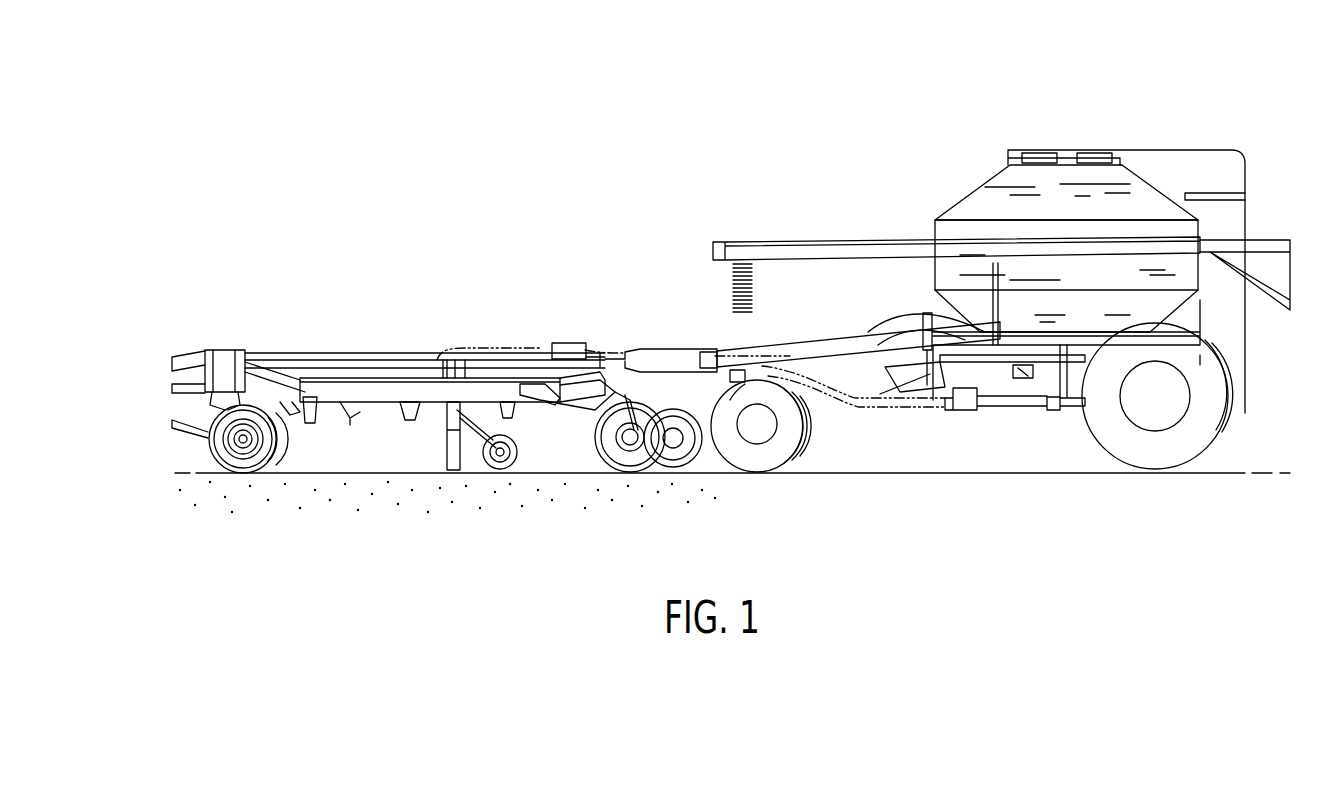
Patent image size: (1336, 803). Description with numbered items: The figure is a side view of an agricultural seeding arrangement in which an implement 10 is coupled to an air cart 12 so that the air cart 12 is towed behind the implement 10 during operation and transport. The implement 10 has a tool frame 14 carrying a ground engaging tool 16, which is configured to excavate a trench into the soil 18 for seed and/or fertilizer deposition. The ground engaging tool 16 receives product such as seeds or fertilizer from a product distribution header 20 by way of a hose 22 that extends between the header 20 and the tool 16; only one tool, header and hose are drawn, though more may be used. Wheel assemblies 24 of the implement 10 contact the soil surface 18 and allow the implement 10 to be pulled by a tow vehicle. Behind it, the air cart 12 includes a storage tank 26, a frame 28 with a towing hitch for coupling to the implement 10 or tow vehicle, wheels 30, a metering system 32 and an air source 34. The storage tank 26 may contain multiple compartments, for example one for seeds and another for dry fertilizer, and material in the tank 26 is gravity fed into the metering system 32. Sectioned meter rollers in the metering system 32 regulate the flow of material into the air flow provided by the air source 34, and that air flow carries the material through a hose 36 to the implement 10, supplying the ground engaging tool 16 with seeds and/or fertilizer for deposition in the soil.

The implement 10 is at (393, 310).
The air cart 12 is at (983, 130).
The tool frame 14 is at (442, 372).
The ground engaging tool 16 is at (447, 470).
The soil 18 is at (560, 462).
The product distribution header 20 is at (570, 345).
The hose 22 is at (505, 342).
The wheel assemblies 24 is at (244, 475).
The storage tank 26 is at (997, 188).
The frame 28 is at (822, 341).
The wheels 30 is at (818, 434).
The metering system 32 is at (1030, 378).
The air source 34 is at (885, 322).
The hose 36 is at (868, 402).